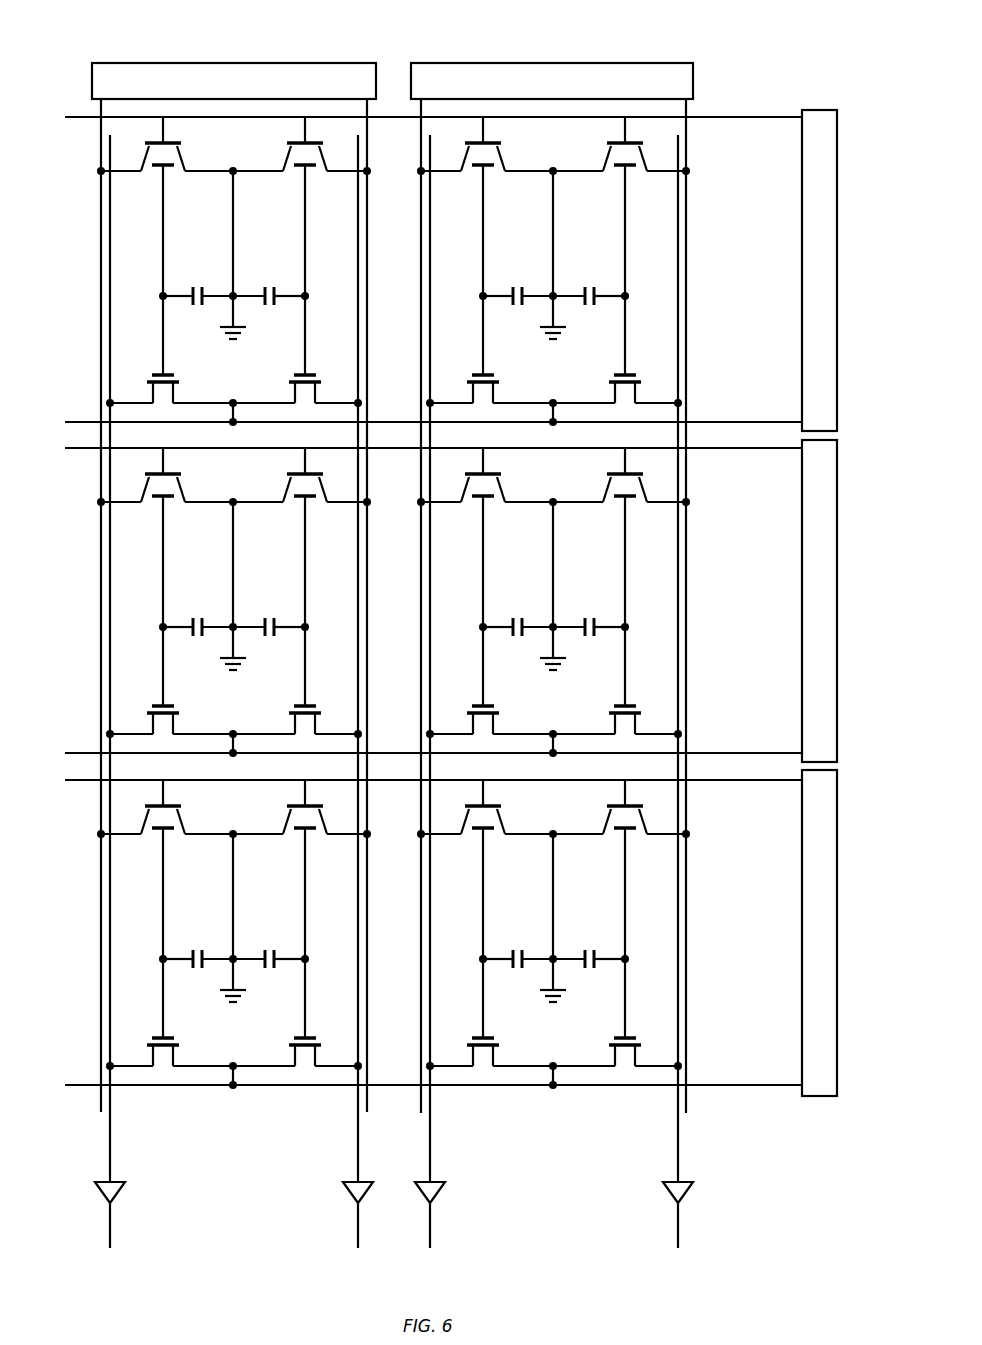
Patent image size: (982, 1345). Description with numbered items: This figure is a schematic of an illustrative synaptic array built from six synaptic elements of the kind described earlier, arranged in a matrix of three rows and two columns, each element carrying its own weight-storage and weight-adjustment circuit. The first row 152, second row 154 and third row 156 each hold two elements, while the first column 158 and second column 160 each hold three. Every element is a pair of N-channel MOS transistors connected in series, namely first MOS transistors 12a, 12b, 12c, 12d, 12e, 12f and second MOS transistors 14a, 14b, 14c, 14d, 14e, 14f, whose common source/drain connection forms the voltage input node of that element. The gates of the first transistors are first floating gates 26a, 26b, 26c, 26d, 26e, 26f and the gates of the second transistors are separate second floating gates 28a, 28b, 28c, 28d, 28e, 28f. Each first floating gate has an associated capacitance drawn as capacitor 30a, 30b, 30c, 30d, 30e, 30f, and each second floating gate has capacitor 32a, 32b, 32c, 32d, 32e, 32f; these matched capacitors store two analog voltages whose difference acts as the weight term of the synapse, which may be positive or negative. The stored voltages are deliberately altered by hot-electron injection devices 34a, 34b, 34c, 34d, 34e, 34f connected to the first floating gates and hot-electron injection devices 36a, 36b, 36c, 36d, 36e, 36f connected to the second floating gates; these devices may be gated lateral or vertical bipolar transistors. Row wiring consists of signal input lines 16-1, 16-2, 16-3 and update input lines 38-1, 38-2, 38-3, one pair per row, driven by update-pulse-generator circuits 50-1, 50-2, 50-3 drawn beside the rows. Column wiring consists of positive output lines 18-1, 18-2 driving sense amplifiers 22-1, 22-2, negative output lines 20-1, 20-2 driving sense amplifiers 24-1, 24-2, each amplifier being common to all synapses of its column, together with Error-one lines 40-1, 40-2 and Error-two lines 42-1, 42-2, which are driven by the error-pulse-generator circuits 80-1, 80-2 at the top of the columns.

The error-pulse-generator circuit 80-1 is at (262, 63).
The error-pulse-generator circuit 80-2 is at (572, 63).
The Error1 line 40-1 is at (101, 342).
The Error1 line 40-2 is at (421, 342).
The Error2 line 42-1 is at (367, 253).
The Error2 line 42-2 is at (686, 253).
The positive output line 18-1 is at (110, 282).
The positive output line 18-2 is at (430, 282).
The negative output line 20-1 is at (358, 282).
The negative output line 20-2 is at (678, 282).
The sense amplifier 22-1 is at (126, 1190).
The sense amplifier 22-2 is at (446, 1190).
The sense amplifier 24-1 is at (344, 1190).
The sense amplifier 24-2 is at (664, 1190).
The update input line 38-1 is at (714, 119).
The update input line 38-2 is at (714, 450).
The update input line 38-3 is at (714, 782).
The signal input line 16-1 is at (716, 421).
The signal input line 16-2 is at (716, 752).
The signal input line 16-3 is at (716, 1084).
The update-pulse-generator circuit 50-1 is at (802, 258).
The update-pulse-generator circuit 50-2 is at (802, 572).
The row driver circuit 50-3 is at (802, 886).
The first row 152 is at (755, 300).
The second row 154 is at (755, 630).
The third row 156 is at (755, 964).
The first column 158 is at (250, 1134).
The second column 160 is at (570, 1134).
The hot-electron injection device 34a is at (178, 168).
The hot-electron injection device 34b is at (499, 144).
The hot-electron injection device 34c is at (178, 475).
The hot-electron injection device 34d is at (499, 475).
The hot-electron injection device 34e is at (179, 807).
The hot-electron injection device 34f is at (497, 807).
The hot-electron injection device 36a is at (290, 168).
The hot-electron injection device 36b is at (607, 144).
The hot-electron injection device 36c is at (287, 475).
The hot-electron injection device 36d is at (607, 475).
The hot-electron injection device 36e is at (287, 807).
The hot-electron injection device 36f is at (607, 807).
The first floating gate 26a is at (163, 213).
The first floating gate 26b is at (514, 270).
The first floating gate 26c is at (193, 601).
The first floating gate 26d is at (514, 601).
The first floating gate 26e is at (194, 933).
The first floating gate 26f is at (512, 933).
The second floating gate 28a is at (305, 213).
The second floating gate 28b is at (592, 270).
The second floating gate 28c is at (272, 601).
The second floating gate 28d is at (592, 601).
The second floating gate 28e is at (272, 933).
The second floating gate 28f is at (592, 933).
The capacitor 30a is at (197, 286).
The capacitor 30b is at (509, 271).
The capacitor 30c is at (188, 602).
The capacitor 30d is at (509, 602).
The capacitor 30e is at (189, 934).
The capacitor 30f is at (507, 934).
The capacitor 32a is at (270, 286).
The capacitor 32b is at (596, 271).
The capacitor 32c is at (275, 602).
The capacitor 32d is at (596, 602).
The capacitor 32e is at (276, 934).
The capacitor 32f is at (594, 934).
The first N-channel MOS transistor 12a is at (175, 376).
The first N-channel MOS transistor 12b is at (499, 371).
The first N-channel MOS transistor 12c is at (179, 702).
The first N-channel MOS transistor 12d is at (499, 702).
The first N-channel MOS transistor 12e is at (179, 1034).
The first N-channel MOS transistor 12f is at (498, 1034).
The second N-channel MOS transistor 14a is at (293, 376).
The second N-channel MOS transistor 14b is at (605, 371).
The second N-channel MOS transistor 14c is at (285, 702).
The second N-channel MOS transistor 14d is at (605, 702).
The second N-channel MOS transistor 14e is at (285, 1034).
The second N-channel MOS transistor 14f is at (605, 1034).